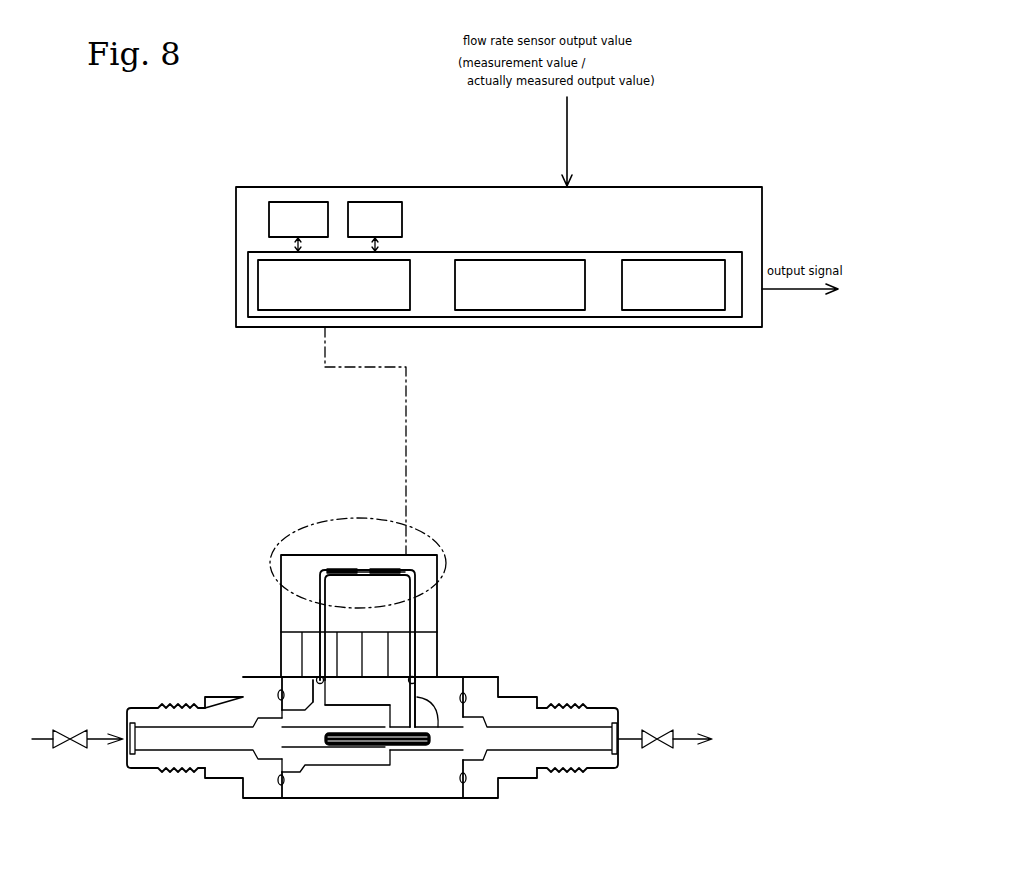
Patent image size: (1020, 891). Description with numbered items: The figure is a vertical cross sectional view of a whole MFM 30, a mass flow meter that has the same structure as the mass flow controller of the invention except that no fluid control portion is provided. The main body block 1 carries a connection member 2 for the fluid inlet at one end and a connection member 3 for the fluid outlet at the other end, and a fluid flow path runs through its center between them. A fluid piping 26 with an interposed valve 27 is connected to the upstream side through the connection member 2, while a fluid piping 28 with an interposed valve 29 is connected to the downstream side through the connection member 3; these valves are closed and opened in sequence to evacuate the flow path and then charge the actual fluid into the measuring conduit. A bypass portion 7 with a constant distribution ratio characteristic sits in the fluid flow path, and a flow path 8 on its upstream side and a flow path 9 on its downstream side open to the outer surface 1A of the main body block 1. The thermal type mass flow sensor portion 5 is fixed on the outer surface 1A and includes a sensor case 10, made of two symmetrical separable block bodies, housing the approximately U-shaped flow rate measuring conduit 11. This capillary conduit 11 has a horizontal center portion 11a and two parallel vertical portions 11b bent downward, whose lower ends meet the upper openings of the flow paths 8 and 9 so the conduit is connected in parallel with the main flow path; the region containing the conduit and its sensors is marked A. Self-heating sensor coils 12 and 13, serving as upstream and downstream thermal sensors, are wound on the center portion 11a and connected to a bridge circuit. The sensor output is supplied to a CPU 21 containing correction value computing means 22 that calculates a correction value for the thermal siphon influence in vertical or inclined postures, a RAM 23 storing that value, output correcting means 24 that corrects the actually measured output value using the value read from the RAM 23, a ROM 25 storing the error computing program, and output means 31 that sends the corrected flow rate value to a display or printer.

The main body block 1 is at (312, 793).
The outer surface 1A is at (473, 677).
The connection member 2 is at (173, 772).
The connection member 3 is at (567, 770).
The thermal type mass flow sensor portion 5 is at (260, 596).
The bypass portion 7 is at (352, 745).
The flow path 8 is at (318, 697).
The flow path 9 is at (438, 742).
The sensor case 10 is at (285, 563).
The flow rate measuring conduit 11 is at (325, 552).
The center portion 11a is at (342, 570).
The vertical portions 11b is at (413, 577).
The sensor coil 12 is at (327, 558).
The sensor coil 13 is at (387, 570).
The CPU 21 is at (443, 187).
The correction value computing means 22 is at (282, 312).
The RAM 23 is at (290, 202).
The output correcting means 24 is at (516, 310).
The ROM 25 is at (370, 202).
The fluid piping 26 is at (43, 742).
The valve 27 is at (80, 745).
The fluid piping 28 is at (688, 742).
The valve 29 is at (668, 727).
The MFM 30 is at (299, 468).
The output means 31 is at (670, 310).
The sensor region A is at (267, 563).